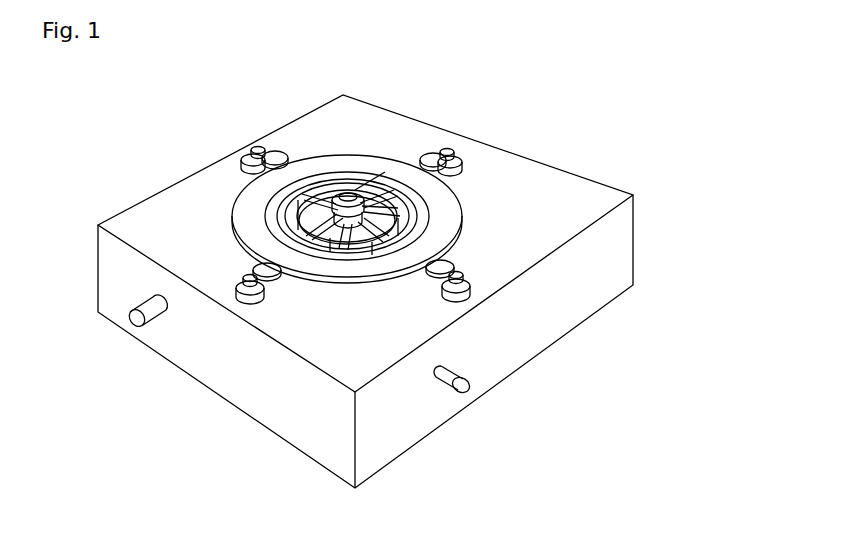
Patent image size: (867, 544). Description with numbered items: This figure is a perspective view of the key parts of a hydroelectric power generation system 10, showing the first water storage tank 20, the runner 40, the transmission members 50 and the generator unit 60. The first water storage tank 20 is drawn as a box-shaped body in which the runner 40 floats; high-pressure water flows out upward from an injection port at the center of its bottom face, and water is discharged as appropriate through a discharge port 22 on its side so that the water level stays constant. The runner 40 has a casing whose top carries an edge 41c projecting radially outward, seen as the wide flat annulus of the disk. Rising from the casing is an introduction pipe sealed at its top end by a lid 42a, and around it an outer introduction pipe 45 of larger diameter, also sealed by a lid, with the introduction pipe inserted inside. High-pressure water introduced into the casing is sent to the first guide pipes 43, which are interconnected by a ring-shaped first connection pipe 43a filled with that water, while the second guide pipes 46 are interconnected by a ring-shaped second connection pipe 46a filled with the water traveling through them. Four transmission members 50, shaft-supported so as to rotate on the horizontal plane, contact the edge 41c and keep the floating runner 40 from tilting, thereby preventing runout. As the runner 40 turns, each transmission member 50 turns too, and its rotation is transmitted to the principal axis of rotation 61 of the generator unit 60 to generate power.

The hydroelectric power generation system 10 is at (461, 131).
The first water storage tank 20 is at (592, 290).
The discharge port 22 is at (138, 310).
The runner 40 is at (278, 211).
The edge 41c is at (455, 213).
The lid 42a is at (312, 214).
The first guide pipes 43 is at (361, 192).
The first connection pipe 43a is at (385, 170).
The outer introduction pipe 45 is at (342, 272).
The second guide pipes 46 is at (303, 230).
The second connection pipe 46a is at (395, 229).
The transmission members 50 is at (274, 158).
The generator unit 60 is at (257, 148).
The principal axis of rotation 61 is at (252, 293).